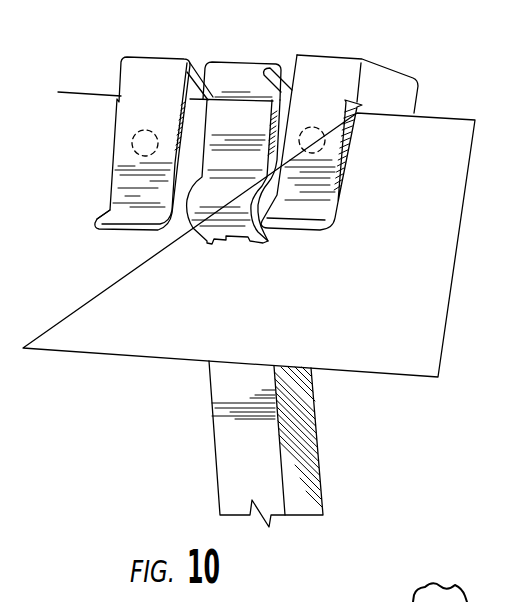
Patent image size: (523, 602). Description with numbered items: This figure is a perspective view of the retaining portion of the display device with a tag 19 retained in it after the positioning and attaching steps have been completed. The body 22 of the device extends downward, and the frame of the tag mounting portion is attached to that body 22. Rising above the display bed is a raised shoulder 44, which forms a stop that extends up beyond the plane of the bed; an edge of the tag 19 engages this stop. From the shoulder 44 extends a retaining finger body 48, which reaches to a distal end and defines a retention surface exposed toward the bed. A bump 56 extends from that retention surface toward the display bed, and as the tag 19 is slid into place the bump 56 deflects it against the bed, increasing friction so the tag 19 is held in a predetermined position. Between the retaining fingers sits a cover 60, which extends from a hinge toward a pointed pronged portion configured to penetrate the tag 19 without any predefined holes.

The tag 19 is at (437, 242).
The body 22 is at (225, 450).
The raised shoulder 44 is at (304, 57).
The retaining finger body 48 is at (156, 92).
The bump 56 is at (132, 145).
The cover 60 is at (242, 117).